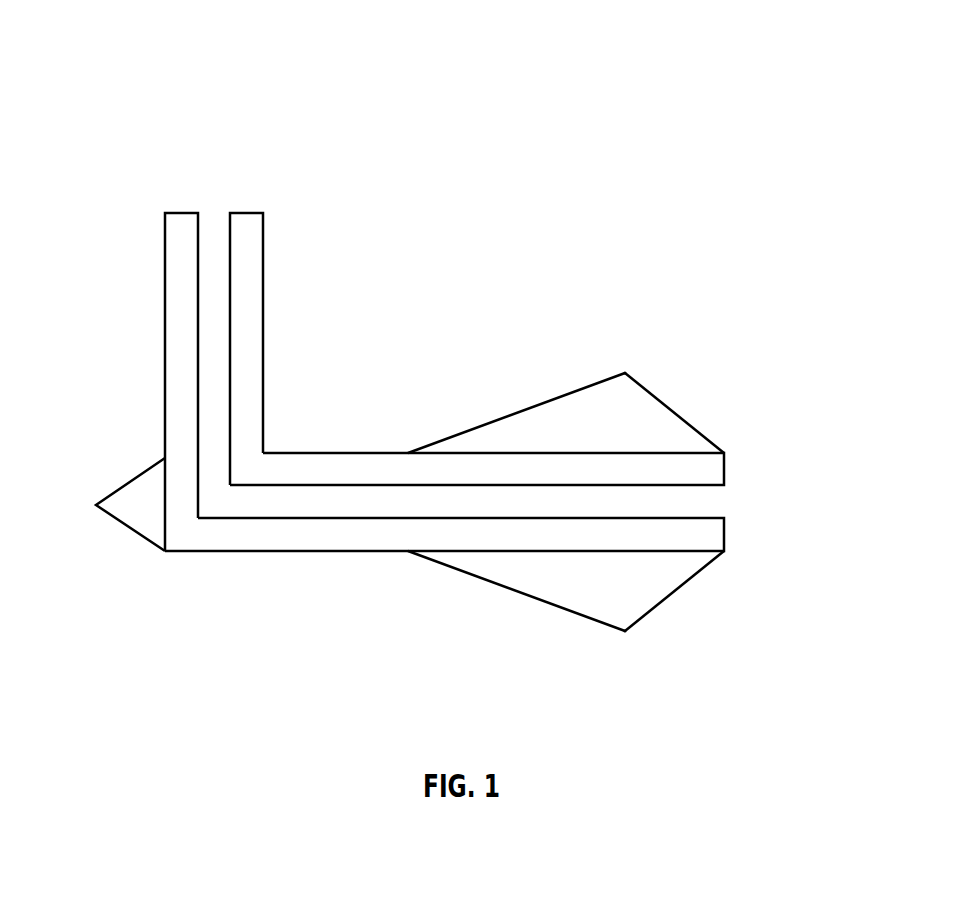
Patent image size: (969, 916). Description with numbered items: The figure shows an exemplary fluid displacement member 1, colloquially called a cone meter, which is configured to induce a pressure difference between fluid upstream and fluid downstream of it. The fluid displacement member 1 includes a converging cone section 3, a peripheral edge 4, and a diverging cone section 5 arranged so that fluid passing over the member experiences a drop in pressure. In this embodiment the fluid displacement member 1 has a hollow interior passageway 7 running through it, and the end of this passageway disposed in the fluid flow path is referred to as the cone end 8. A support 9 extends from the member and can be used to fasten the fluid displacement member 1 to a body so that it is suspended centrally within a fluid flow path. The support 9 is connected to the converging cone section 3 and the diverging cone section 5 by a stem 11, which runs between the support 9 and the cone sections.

The fluid displacement member 1 is at (232, 56).
The converging cone section 3 is at (716, 560).
The peripheral edge 4 is at (625, 631).
The diverging cone section 5 is at (572, 613).
The interior passageway 7 is at (724, 505).
The cone end 8 is at (726, 470).
The support 9 is at (165, 312).
The stem 11 is at (405, 570).